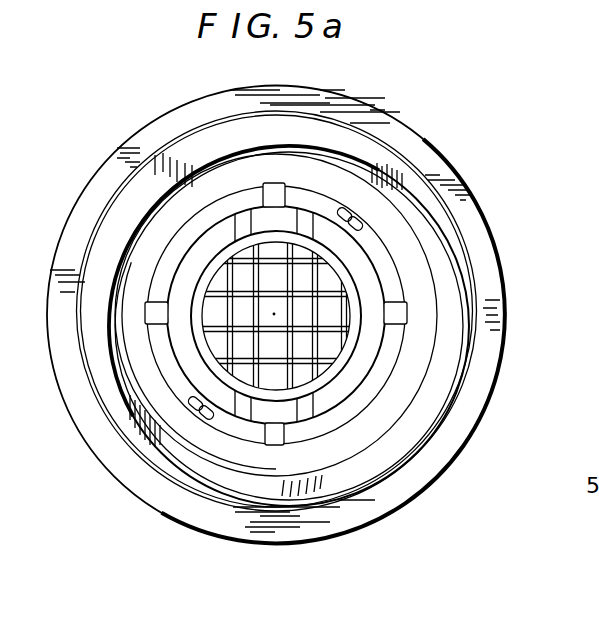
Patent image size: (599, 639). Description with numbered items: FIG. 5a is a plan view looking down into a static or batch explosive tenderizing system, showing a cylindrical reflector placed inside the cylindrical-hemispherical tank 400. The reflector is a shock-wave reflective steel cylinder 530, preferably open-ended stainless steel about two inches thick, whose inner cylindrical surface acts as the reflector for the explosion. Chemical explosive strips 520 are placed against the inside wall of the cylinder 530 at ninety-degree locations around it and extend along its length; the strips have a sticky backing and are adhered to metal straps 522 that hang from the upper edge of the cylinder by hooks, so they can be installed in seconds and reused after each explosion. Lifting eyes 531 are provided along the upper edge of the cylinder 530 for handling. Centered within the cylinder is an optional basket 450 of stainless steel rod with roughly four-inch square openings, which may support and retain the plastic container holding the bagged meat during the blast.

The tank 400 is at (116, 208).
The basket 450 is at (322, 388).
The chemical explosive strip 520 is at (153, 342).
The metal strap 522 is at (270, 446).
The shock-wave reflective steel cylinder 530 is at (197, 215).
The lifting eye 531 is at (355, 217).